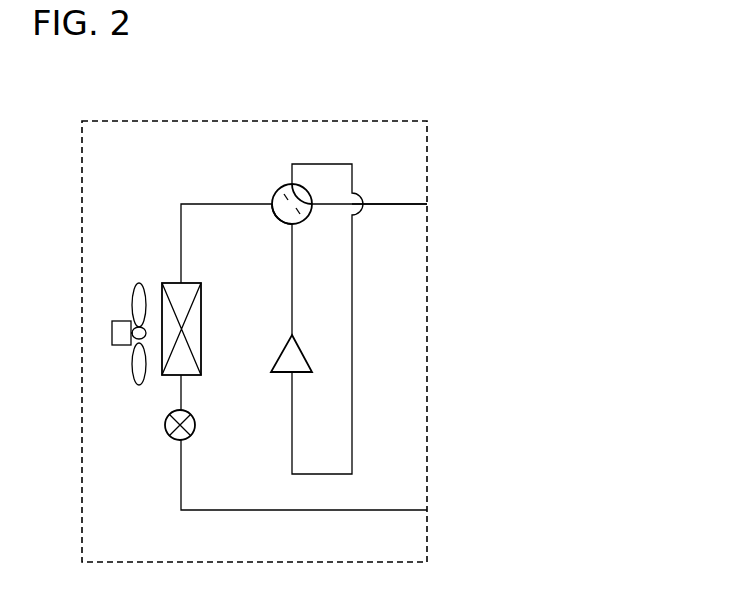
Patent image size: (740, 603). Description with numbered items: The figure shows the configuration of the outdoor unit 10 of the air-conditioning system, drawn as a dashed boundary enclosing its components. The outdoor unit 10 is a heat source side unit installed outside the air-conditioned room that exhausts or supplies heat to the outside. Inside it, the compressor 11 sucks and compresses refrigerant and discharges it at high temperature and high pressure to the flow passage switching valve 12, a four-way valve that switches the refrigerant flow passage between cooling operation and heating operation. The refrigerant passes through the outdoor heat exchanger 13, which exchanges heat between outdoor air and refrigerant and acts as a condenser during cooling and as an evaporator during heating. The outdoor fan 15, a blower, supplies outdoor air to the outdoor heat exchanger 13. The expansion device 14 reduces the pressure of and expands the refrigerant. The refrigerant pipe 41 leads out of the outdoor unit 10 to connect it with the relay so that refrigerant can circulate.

The outdoor unit 10 is at (108, 120).
The compressor 11 is at (304, 352).
The flow passage switching valve 12 is at (277, 191).
The outdoor heat exchanger 13 is at (191, 281).
The expansion device 14 is at (196, 425).
The outdoor fan 15 is at (114, 319).
The refrigerant pipe 41 is at (400, 206).